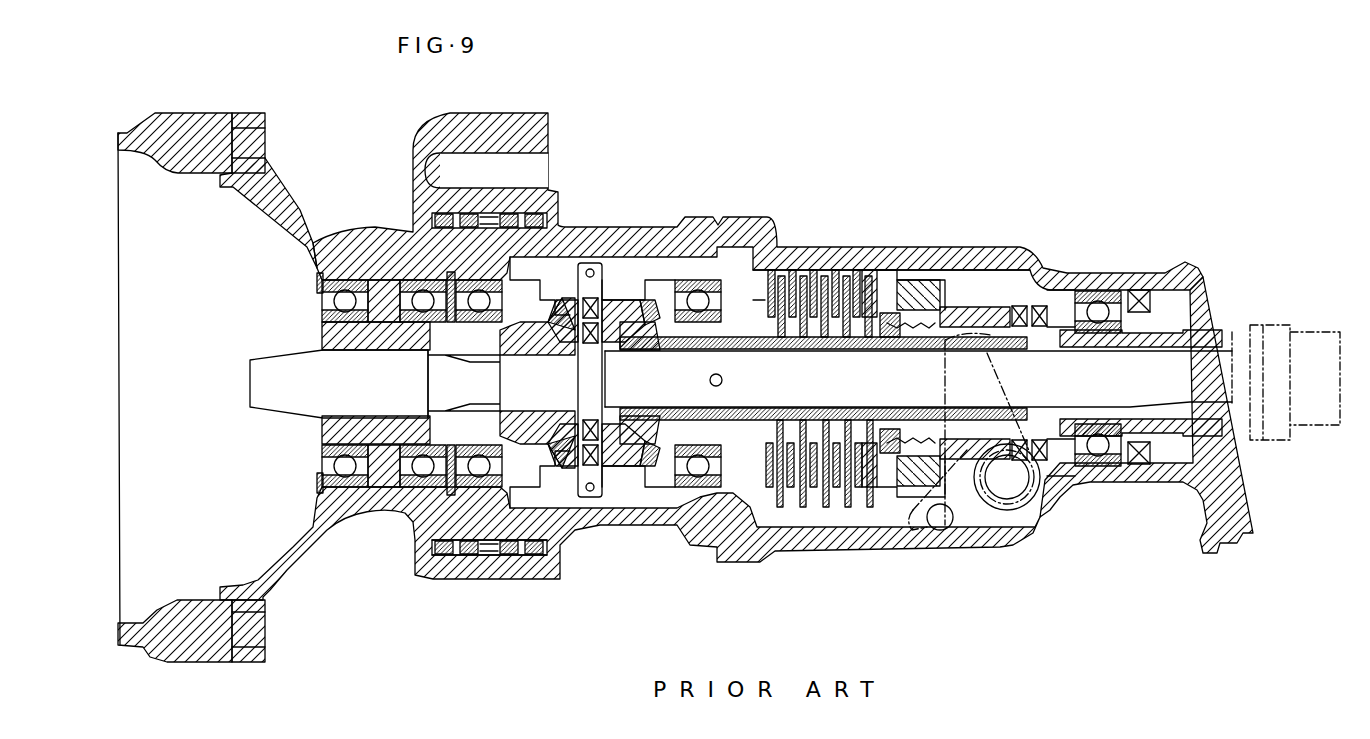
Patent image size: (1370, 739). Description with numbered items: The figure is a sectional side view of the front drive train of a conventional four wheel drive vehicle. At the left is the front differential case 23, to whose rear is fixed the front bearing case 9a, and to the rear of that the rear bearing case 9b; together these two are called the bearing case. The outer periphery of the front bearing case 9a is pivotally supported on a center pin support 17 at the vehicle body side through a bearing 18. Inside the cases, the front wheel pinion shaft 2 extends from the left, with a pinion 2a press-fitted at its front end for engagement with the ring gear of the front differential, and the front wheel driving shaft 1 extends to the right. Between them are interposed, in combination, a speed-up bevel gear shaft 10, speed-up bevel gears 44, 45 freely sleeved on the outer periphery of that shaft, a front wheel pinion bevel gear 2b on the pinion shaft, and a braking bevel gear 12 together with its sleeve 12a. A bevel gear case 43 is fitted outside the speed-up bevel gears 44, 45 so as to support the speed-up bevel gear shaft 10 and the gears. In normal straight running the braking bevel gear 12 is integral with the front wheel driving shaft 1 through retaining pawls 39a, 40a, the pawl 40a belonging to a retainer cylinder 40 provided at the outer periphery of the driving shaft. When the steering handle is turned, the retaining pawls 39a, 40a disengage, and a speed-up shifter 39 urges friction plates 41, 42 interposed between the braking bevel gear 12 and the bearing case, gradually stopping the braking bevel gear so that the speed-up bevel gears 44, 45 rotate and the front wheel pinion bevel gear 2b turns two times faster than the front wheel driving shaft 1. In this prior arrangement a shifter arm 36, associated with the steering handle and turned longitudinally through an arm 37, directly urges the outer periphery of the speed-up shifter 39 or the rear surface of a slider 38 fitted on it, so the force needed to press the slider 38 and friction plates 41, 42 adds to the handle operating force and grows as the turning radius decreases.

The front wheel driving shaft 1 is at (1176, 400).
The front wheel pinion shaft 2 is at (398, 406).
The pinion 2a is at (288, 422).
The front wheel pinion bevel gear 2b is at (530, 352).
The front bearing case 9a is at (653, 232).
The rear bearing case 9b is at (871, 248).
The speed-up bevel gear shaft 10 is at (605, 389).
The braking bevel gear 12 is at (656, 349).
The sleeve 12a is at (762, 350).
The center pin support 17 is at (466, 577).
The bearing 18 is at (463, 548).
The front differential case 23 is at (200, 162).
The shifter arm 36 is at (1002, 396).
The arm 37 is at (922, 497).
The slider 38 is at (922, 280).
The speed-up shifter 39 is at (976, 318).
The retaining pawl 39a is at (1017, 306).
The retainer cylinder 40 is at (1225, 340).
The retaining pawl 40a is at (1040, 300).
The friction plate 41 is at (828, 346).
The friction plate 42 is at (817, 270).
The bevel gear case 43 is at (612, 268).
The speed-up bevel gear 44 is at (592, 286).
The speed-up bevel gear 45 is at (558, 487).